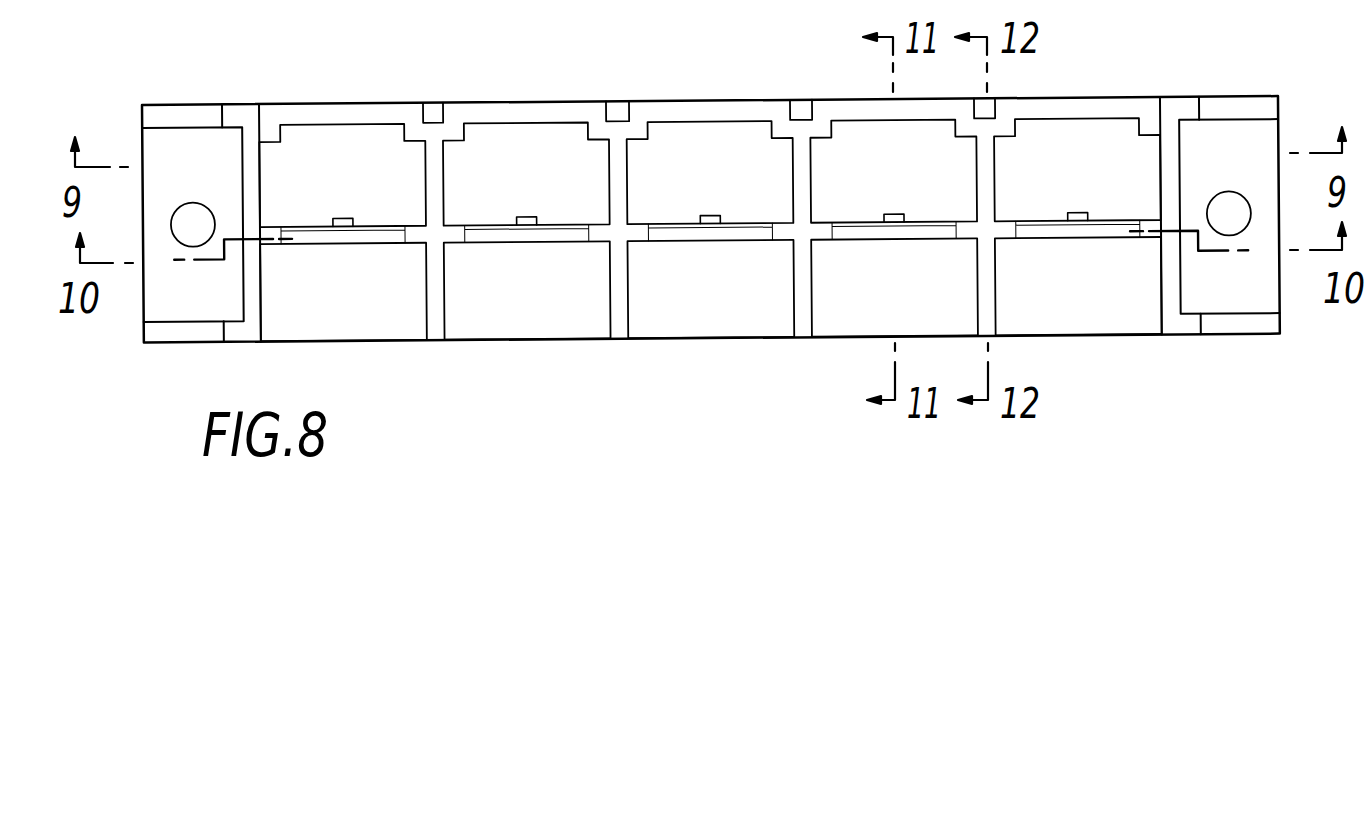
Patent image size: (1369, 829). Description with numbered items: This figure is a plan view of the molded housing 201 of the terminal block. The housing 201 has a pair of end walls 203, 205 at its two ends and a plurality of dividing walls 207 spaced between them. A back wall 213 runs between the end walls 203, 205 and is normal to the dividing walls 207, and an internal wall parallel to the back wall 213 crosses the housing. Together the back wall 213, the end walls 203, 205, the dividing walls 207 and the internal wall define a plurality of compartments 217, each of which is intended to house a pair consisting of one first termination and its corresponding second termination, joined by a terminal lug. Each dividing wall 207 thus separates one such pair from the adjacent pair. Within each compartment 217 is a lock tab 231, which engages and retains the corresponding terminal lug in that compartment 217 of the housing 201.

The housing 201 is at (1179, 399).
The end wall 203 is at (1183, 273).
The end wall 205 is at (242, 168).
The dividing wall 207 is at (440, 335).
The back wall 213 is at (1082, 98).
The compartment 217 is at (502, 147).
The lock tab 231 is at (1077, 210).